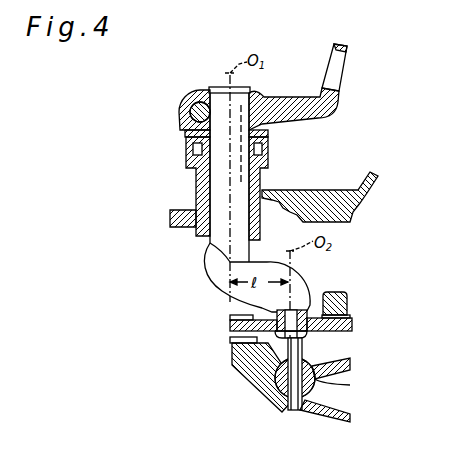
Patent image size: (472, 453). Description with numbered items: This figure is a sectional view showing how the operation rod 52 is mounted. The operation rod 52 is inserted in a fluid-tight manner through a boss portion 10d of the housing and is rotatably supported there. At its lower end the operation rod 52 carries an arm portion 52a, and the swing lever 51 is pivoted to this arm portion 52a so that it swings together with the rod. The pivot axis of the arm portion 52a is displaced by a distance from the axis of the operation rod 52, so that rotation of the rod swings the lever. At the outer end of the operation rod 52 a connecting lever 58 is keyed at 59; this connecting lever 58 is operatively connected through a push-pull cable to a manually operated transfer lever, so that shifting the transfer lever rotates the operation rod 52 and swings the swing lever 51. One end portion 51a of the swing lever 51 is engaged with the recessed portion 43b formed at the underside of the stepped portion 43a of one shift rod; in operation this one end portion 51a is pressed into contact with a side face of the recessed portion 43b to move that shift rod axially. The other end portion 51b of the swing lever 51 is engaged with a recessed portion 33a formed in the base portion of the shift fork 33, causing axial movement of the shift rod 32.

The operation rod 52 is at (214, 186).
The arm portion 52a is at (298, 292).
The key 59 is at (178, 112).
The connecting lever 58 is at (333, 102).
The boss portion 10d is at (276, 196).
The swing lever 51 is at (231, 366).
The one end portion 51a is at (346, 337).
The other end portion 51b is at (230, 325).
The stepped portion 43a is at (348, 297).
The recessed portion 43b is at (350, 320).
The shift fork 33 is at (324, 383).
The recessed portion 33a is at (232, 341).
The shift rod 32 is at (276, 392).